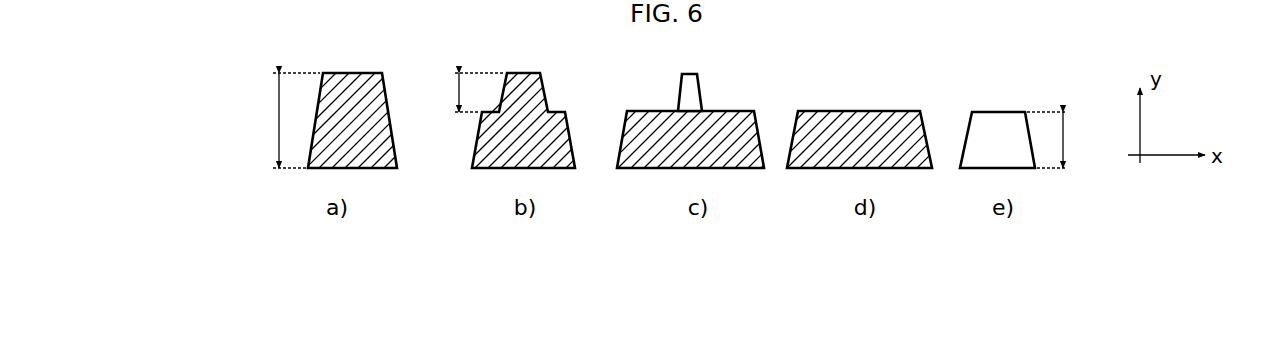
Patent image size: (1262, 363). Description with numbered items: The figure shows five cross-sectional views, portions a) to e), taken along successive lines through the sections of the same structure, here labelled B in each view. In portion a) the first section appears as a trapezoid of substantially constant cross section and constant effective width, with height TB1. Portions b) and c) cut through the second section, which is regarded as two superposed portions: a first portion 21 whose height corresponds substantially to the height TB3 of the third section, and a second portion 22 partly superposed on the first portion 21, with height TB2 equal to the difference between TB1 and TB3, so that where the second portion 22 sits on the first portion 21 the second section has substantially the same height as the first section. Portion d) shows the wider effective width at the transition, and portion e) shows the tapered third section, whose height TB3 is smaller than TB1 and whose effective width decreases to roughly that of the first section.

The bump (protruding structure) B is at (313, 52).
The first portion 21 is at (565, 168).
The second portion 22 is at (538, 92).
The height of the first section TB1 is at (273, 112).
The height of the second portion TB2 is at (455, 96).
The height of the third section TB3 is at (1067, 137).